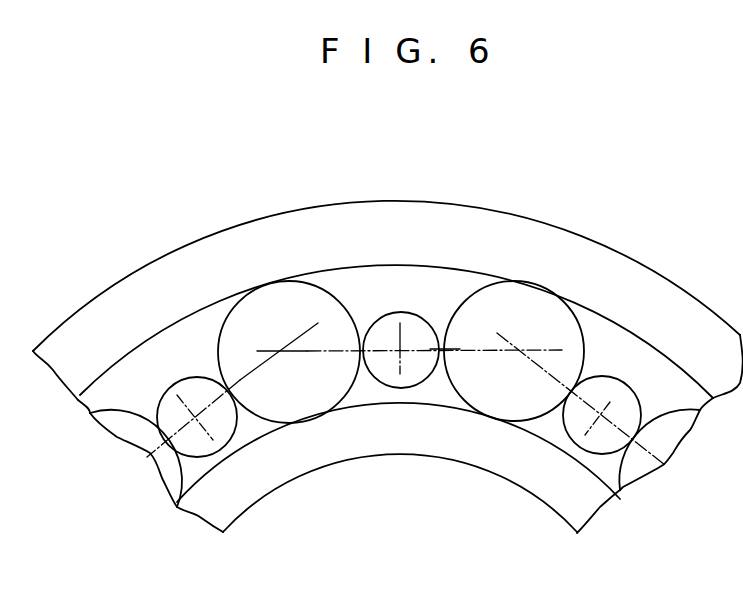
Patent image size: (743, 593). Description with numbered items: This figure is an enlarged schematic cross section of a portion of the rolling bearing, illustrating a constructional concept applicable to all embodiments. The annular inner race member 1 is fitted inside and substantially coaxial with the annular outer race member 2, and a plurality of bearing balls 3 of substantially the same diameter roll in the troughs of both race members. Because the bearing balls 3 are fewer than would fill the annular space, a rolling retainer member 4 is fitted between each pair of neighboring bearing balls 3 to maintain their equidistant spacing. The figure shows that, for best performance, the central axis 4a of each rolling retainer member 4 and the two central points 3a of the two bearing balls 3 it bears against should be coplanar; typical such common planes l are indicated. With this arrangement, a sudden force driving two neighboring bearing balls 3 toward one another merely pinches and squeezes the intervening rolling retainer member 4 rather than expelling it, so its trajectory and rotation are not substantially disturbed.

The inner race member 1 is at (555, 495).
The outer race member 2 is at (568, 257).
The bearing ball 3 is at (260, 302).
The rolling retainer member 4 is at (392, 312).
The central point of bearing ball 3a is at (518, 365).
The central axis of rolling retainer member 4a is at (196, 417).
The common plane l is at (148, 447).